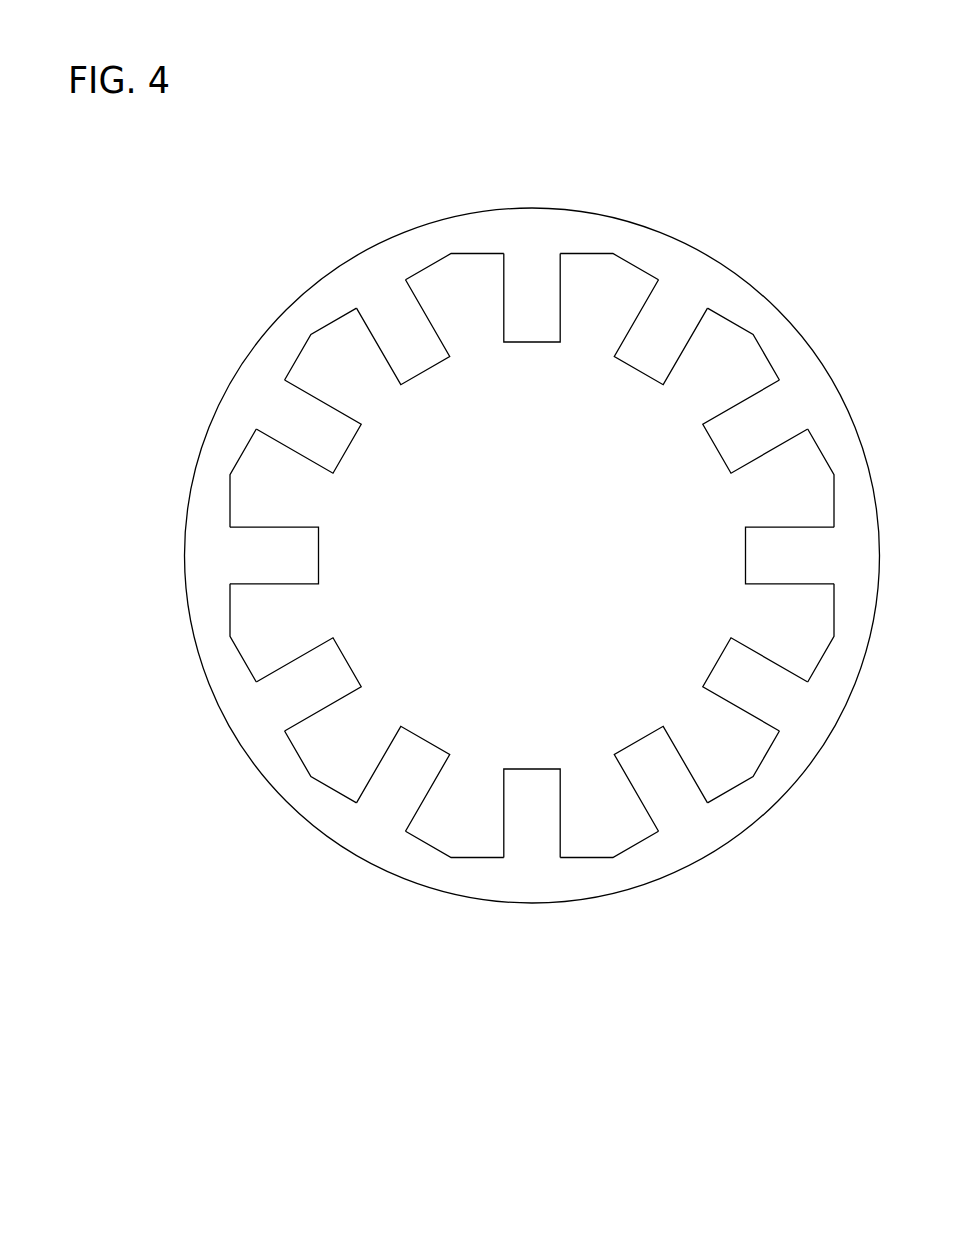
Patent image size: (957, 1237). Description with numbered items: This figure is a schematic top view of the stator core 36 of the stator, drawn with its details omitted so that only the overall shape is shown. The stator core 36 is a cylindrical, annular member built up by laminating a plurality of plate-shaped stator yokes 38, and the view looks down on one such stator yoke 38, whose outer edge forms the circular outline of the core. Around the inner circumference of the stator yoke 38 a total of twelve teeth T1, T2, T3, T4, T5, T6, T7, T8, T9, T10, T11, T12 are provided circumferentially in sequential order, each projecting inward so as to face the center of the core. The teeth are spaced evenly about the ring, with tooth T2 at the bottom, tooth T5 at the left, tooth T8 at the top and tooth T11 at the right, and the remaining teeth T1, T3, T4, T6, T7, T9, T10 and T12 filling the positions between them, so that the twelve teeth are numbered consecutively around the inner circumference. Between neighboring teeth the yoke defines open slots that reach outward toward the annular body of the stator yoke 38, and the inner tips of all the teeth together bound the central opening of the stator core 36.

The stator core 36 is at (547, 1012).
The stator yoke 38 is at (539, 207).
The tooth T1 is at (640, 737).
The tooth T2 is at (537, 767).
The tooth T3 is at (428, 742).
The tooth T4 is at (348, 660).
The tooth T5 is at (318, 555).
The tooth T6 is at (348, 452).
The tooth T7 is at (423, 373).
The tooth T8 is at (527, 344).
The tooth T9 is at (635, 372).
The tooth T10 is at (718, 452).
The tooth T11 is at (745, 555).
The tooth T12 is at (718, 660).